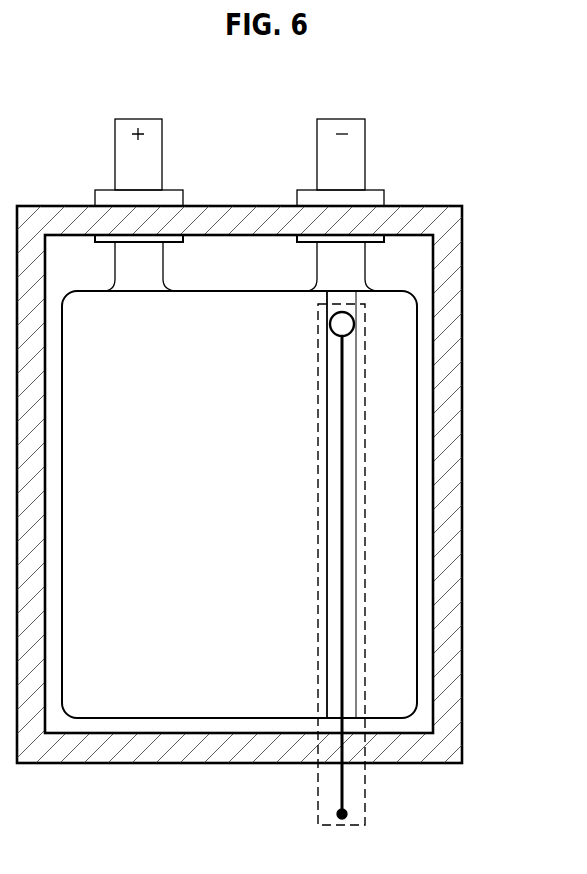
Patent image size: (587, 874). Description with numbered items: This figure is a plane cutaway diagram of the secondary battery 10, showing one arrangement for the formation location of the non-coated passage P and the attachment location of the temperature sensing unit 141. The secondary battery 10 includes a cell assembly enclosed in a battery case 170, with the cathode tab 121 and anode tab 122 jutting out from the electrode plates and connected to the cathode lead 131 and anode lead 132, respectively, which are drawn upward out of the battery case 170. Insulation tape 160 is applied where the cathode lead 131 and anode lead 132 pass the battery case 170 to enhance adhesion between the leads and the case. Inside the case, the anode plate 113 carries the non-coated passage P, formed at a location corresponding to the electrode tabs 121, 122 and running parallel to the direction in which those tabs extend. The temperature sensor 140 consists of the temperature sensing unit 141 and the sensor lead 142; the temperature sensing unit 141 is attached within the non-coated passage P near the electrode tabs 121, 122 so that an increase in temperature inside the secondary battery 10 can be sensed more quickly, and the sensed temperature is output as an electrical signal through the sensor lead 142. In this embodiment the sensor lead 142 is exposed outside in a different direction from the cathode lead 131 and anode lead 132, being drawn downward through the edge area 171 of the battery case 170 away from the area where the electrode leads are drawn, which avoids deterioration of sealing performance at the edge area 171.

The secondary battery 10 is at (73, 89).
The anode plate 113 is at (417, 463).
The cathode tab 121 is at (162, 272).
The anode tab 122 is at (317, 272).
The cathode lead 131 is at (162, 143).
The anode lead 132 is at (365, 143).
The temperature sensor 140 is at (318, 450).
The temperature sensing unit 141 is at (330, 323).
The sensor lead 142 is at (340, 402).
The insulation tape 160 is at (183, 191).
The battery case 170 is at (462, 206).
The edge area 171 is at (453, 312).
The non-coated passage P is at (350, 368).